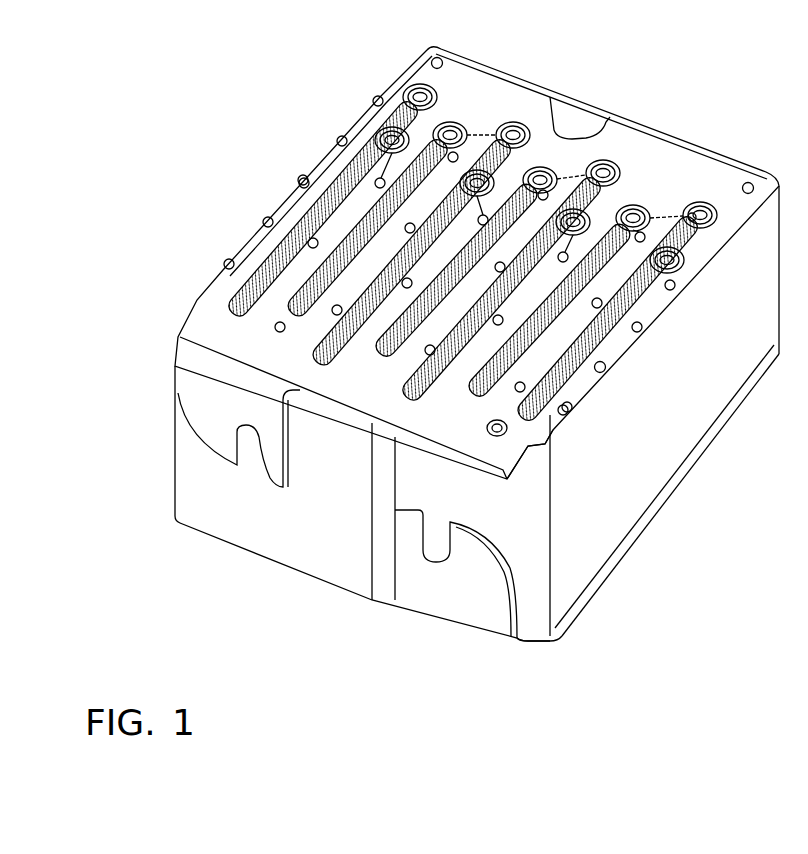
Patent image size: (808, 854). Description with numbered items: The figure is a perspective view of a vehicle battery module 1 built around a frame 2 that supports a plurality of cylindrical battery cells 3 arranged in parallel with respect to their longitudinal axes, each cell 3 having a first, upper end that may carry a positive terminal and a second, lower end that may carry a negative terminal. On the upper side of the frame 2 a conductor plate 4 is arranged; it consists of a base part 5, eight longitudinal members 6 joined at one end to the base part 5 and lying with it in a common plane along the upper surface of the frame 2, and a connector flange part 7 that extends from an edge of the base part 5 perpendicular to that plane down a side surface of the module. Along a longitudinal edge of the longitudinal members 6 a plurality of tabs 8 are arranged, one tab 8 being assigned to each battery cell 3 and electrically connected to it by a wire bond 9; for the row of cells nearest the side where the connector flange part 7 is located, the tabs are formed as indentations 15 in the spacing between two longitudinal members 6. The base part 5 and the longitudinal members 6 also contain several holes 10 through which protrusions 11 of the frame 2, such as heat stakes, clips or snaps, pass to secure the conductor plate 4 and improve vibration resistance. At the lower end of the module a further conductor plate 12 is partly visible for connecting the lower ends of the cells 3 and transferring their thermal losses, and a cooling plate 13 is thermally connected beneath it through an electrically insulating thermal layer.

The vehicle battery module 1 is at (451, 375).
The frame 2 is at (343, 534).
The cylindrical battery cell 3 is at (705, 208).
The conductor plate 4 is at (458, 278).
The base part 5 is at (353, 383).
The longitudinal member 6 is at (318, 158).
The connector flange part 7 is at (193, 387).
The tab 8 is at (680, 237).
The wire bond 9 is at (691, 212).
The hole 10 is at (614, 368).
The protrusion 11 is at (600, 385).
The further conductor plate 12 is at (523, 630).
The cooling plate 13 is at (567, 623).
The indentation 15 is at (494, 437).